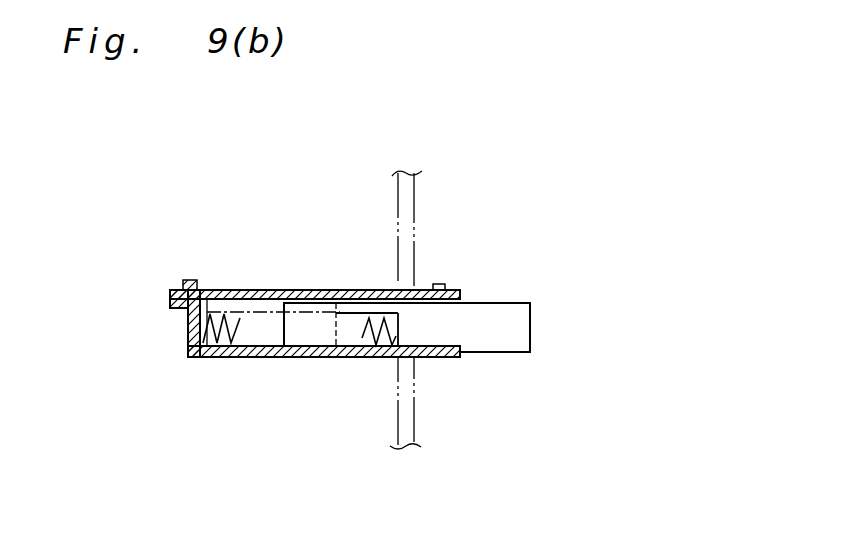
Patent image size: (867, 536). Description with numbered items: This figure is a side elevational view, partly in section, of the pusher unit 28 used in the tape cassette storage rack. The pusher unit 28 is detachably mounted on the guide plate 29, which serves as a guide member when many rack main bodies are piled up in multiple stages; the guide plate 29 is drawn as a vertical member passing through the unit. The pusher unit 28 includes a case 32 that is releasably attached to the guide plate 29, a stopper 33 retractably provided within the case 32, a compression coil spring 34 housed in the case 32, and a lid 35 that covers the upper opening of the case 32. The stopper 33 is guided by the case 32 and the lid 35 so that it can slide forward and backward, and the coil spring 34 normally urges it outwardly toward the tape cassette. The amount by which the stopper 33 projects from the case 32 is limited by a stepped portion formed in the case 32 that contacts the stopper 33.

The pusher unit 28 is at (475, 232).
The guide plate 29 is at (410, 412).
The case 32 is at (313, 358).
The stopper 33 is at (505, 325).
The compression coil spring 34 is at (228, 358).
The lid 35 is at (303, 290).